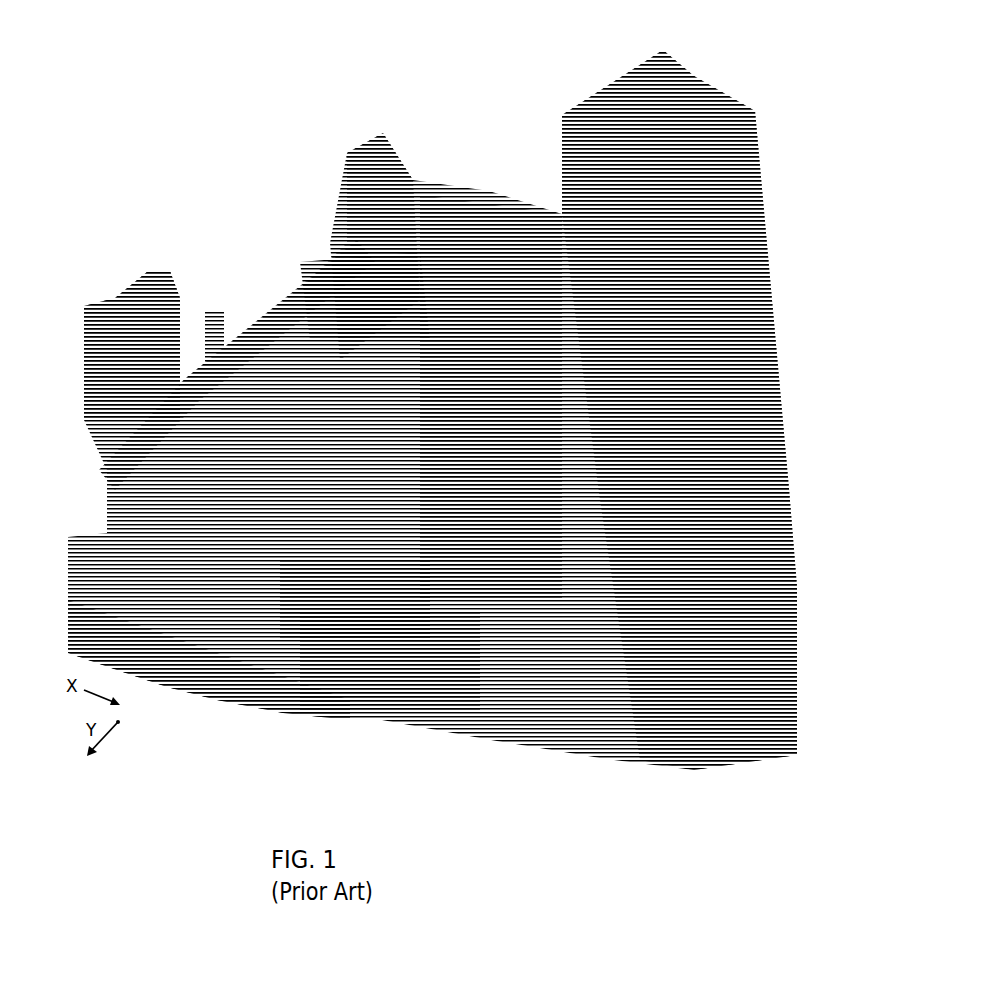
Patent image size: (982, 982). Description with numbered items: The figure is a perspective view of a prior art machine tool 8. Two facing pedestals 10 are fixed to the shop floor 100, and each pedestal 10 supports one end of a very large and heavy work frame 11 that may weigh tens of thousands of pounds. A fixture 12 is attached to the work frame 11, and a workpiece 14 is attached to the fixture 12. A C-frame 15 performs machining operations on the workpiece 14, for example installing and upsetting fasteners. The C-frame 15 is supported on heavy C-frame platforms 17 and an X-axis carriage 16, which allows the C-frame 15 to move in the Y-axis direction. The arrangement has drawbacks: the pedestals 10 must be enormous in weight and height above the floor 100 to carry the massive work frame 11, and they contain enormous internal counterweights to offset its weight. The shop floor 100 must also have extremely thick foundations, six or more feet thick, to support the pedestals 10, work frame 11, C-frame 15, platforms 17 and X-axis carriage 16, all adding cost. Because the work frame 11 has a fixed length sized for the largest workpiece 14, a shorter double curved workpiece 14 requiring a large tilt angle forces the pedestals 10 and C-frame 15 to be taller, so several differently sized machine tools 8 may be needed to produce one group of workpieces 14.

The machine tool 8 is at (474, 54).
The pedestals 10 is at (741, 153).
The work frame 11 is at (263, 330).
The fixture 12 is at (347, 288).
The workpiece 14 is at (323, 353).
The C-frame 15 is at (548, 474).
The X-axis carriage 16 is at (363, 663).
The C-frame platforms 17 is at (333, 598).
The shop floor 100 is at (158, 668).